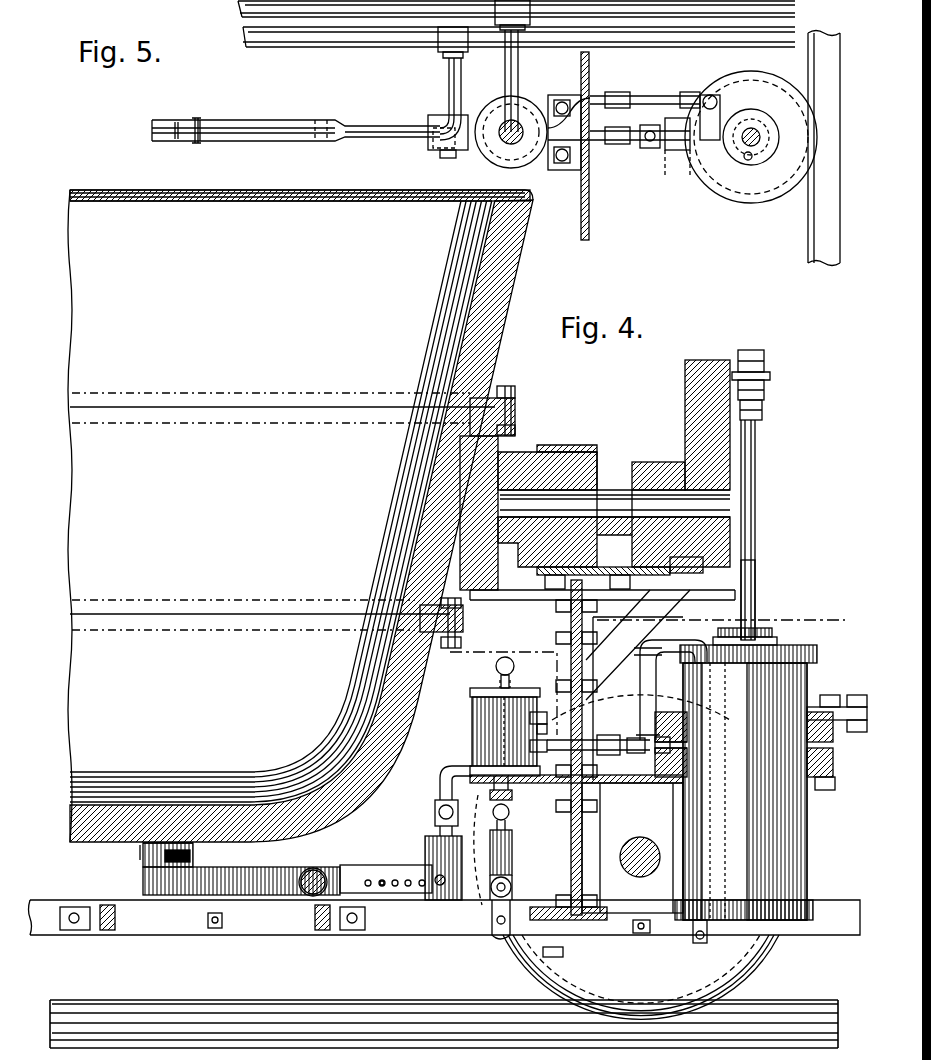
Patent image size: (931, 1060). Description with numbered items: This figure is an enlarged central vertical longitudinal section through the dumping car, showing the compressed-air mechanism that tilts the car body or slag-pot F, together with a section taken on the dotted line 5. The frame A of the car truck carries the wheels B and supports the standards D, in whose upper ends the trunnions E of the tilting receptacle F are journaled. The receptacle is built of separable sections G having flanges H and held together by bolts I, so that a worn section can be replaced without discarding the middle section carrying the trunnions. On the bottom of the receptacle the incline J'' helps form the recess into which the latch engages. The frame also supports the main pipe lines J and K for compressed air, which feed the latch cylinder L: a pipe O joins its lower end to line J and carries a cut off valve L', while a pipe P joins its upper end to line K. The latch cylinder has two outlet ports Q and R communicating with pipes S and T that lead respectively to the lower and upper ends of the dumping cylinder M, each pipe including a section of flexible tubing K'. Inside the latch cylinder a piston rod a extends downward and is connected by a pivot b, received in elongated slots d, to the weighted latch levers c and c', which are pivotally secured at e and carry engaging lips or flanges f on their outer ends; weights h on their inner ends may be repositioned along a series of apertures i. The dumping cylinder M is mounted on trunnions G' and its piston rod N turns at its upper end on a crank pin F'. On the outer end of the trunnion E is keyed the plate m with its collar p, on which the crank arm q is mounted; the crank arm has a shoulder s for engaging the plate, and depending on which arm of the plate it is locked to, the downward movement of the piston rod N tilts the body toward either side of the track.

In FIG. 4, the frame of the car truck A is at (445, 931).
In FIG. 4, the wheels B is at (641, 857).
In FIG. 4, the standards D is at (580, 747).
In FIG. 4, the trunnions E is at (612, 475).
In FIG. 4, the tilting car body or slag-pot F is at (300, 516).
In FIG. 4, the crank pin F' is at (759, 385).
In FIG. 4, the separable sections G is at (282, 501).
In FIG. 4, the trunnions of the dumping cylinder G' is at (757, 736).
In FIG. 4, the flanges H is at (516, 420).
In FIG. 4, the bolts I is at (432, 668).
In FIG. 5, the main pipe line J is at (519, 50).
In FIG. 4, the main pipe line J is at (568, 927).
In FIG. 4, the incline J'' is at (241, 869).
In FIG. 5, the main pipe line K is at (516, 37).
In FIG. 4, the main pipe line K is at (598, 739).
In FIG. 5, the flexible tubing sections K' is at (580, 146).
In FIG. 4, the flexible tubing sections K' is at (547, 704).
In FIG. 5, the latch cylinder L is at (510, 139).
In FIG. 4, the latch cylinder L is at (503, 722).
In FIG. 4, the cut off valve L' is at (432, 818).
In FIG. 5, the dumping cylinder M is at (751, 137).
In FIG. 4, the dumping cylinder M is at (746, 774).
In FIG. 5, the piston rod N is at (754, 128).
In FIG. 4, the piston rod N is at (755, 601).
In FIG. 5, the pipe O is at (449, 76).
In FIG. 4, the pipe O is at (447, 780).
In FIG. 5, the pipe P is at (505, 76).
In FIG. 4, the pipe P is at (510, 657).
In FIG. 4, the outlet port Q is at (537, 727).
In FIG. 4, the outlet port R is at (537, 751).
In FIG. 5, the pipe S is at (650, 100).
In FIG. 4, the pipe S is at (648, 752).
In FIG. 5, the pipe T is at (646, 148).
In FIG. 4, the pipe T is at (678, 646).
In FIG. 4, the piston rod a is at (493, 813).
In FIG. 4, the pivot b is at (510, 882).
In FIG. 5, the latch lever c is at (296, 122).
In FIG. 5, the latch lever c' is at (392, 146).
In FIG. 4, the latch lever c' is at (386, 868).
In FIG. 4, the elongated slots d is at (497, 934).
In FIG. 4, the pivot of latch levers e is at (320, 874).
In FIG. 5, the engaging lips or flanges f is at (160, 150).
In FIG. 4, the bracket g' is at (150, 855).
In FIG. 5, the weights h is at (432, 148).
In FIG. 4, the weights h is at (434, 868).
In FIG. 4, the series of apertures i is at (382, 888).
In FIG. 4, the plate m is at (758, 466).
In FIG. 4, the collar p is at (682, 465).
In FIG. 4, the crank arm q is at (699, 425).
In FIG. 4, the shoulder s is at (706, 932).
In FIG. 4, the section line 5 is at (653, 673).